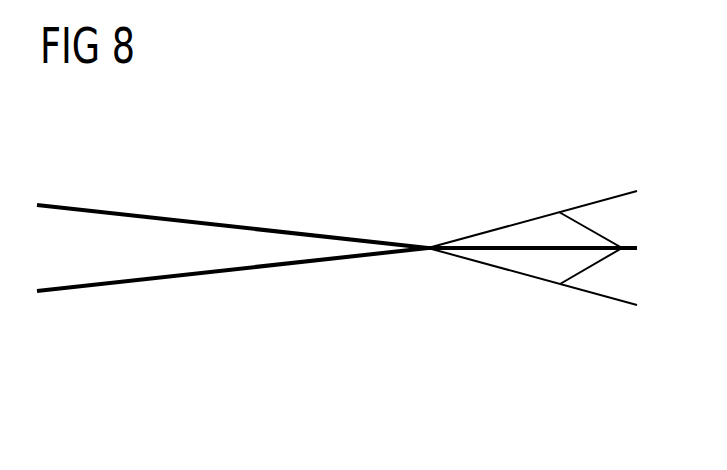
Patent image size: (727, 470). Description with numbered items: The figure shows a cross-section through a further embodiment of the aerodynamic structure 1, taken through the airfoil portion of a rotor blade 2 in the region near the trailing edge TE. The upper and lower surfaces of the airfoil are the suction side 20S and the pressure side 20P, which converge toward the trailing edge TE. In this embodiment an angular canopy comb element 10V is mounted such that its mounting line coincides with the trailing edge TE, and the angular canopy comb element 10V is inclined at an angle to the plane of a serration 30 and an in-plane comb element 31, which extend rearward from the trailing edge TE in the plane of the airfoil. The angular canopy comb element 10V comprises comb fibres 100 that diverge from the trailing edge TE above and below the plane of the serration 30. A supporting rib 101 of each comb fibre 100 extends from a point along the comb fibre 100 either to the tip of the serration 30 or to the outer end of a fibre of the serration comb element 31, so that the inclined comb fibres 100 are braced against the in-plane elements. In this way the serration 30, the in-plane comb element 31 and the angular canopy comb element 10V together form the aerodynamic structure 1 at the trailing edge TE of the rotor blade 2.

The aerodynamic structure 1 is at (377, 107).
The rotor blade 2 is at (163, 217).
The suction side 20S is at (72, 208).
The pressure side 20P is at (73, 288).
The trailing edge TE is at (427, 250).
The serration 30 is at (532, 290).
The in-plane comb element 31 is at (520, 251).
The angular canopy comb element 10V is at (530, 179).
The comb fibre 100 is at (603, 198).
The supporting rib 101 is at (592, 229).